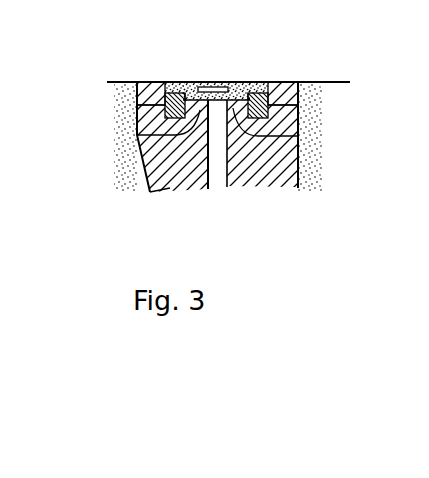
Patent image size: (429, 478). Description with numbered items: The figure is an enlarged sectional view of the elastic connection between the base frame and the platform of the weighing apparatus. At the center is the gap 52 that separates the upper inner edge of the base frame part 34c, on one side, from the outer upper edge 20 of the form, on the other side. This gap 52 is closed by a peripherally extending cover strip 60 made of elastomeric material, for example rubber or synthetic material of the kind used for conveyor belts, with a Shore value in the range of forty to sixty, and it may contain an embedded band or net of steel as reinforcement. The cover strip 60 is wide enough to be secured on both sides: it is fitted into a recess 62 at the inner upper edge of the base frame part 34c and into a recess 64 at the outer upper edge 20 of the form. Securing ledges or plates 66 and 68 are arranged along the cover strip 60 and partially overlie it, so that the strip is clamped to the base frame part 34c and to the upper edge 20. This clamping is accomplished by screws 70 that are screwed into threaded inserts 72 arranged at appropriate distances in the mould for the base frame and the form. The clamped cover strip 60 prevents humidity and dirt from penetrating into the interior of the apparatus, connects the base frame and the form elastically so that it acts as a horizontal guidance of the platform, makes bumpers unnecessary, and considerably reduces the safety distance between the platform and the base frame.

The outer upper edge of the form 20 is at (278, 190).
The base frame part 34c is at (168, 186).
The gap 52 is at (218, 187).
The cover strip 60 is at (216, 84).
The recess 62 is at (137, 135).
The recess 64 is at (298, 138).
The securing ledge 66 is at (178, 95).
The securing ledge 68 is at (266, 93).
The screw 70 is at (182, 93).
The threaded insert 72 is at (137, 105).